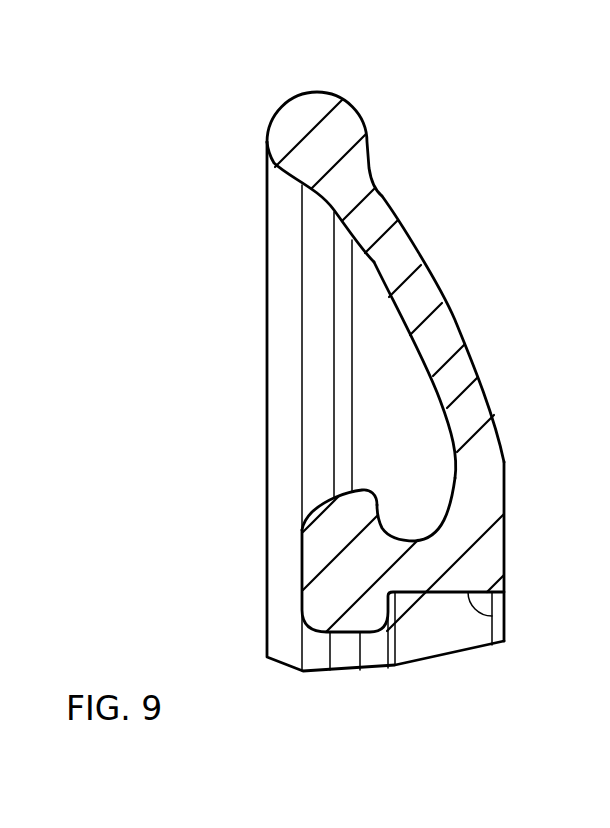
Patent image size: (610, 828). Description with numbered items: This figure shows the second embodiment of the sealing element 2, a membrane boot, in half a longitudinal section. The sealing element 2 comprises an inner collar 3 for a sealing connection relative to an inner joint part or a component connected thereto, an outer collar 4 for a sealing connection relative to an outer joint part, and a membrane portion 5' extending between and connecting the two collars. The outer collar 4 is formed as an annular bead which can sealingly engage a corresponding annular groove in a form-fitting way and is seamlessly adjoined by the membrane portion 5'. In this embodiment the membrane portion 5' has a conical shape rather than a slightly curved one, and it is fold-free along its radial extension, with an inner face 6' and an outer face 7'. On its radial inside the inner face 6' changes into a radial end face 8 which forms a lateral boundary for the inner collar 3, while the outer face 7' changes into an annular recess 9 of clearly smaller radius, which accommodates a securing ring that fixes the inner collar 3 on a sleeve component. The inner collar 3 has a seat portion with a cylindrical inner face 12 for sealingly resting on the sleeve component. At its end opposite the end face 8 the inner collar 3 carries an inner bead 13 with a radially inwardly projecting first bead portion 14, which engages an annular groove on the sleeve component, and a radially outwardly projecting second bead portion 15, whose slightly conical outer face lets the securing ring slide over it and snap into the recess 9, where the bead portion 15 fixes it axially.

The sealing element 2 is at (513, 155).
The inner collar 3 is at (435, 608).
The outer collar 4 is at (318, 107).
The membrane portion 5' is at (460, 338).
The inner face 6' is at (462, 329).
The outer face 7' is at (408, 370).
The end face 8 is at (505, 557).
The recess 9 is at (417, 538).
The inner face 12 is at (493, 612).
The inner bead 13 is at (318, 576).
The first bead portion 14 is at (345, 625).
The second bead portion 15 is at (320, 504).